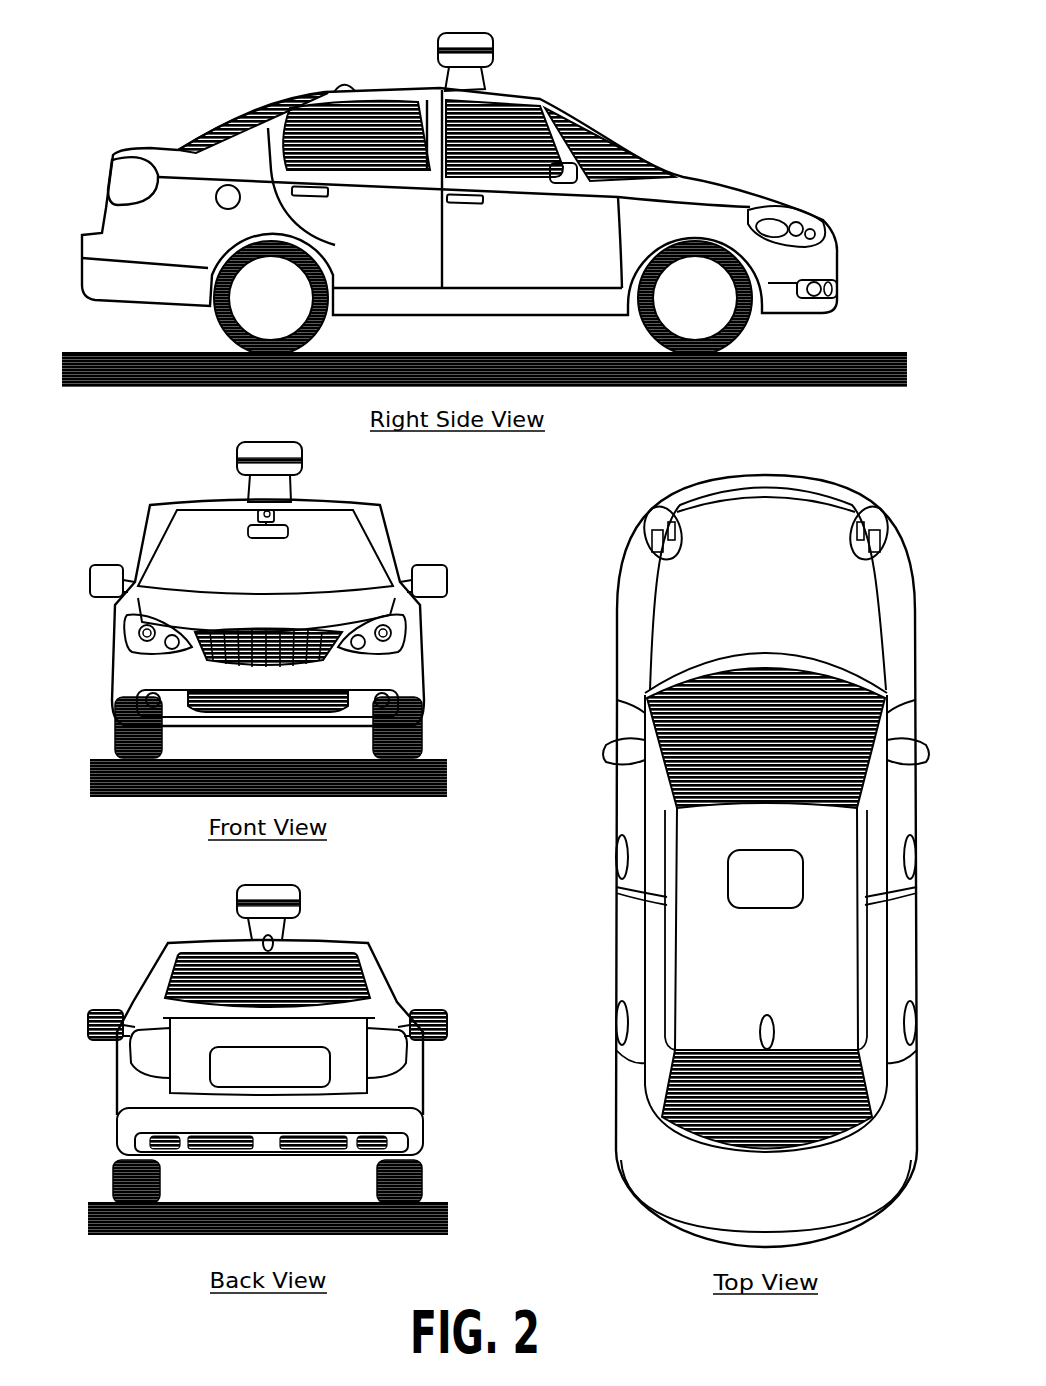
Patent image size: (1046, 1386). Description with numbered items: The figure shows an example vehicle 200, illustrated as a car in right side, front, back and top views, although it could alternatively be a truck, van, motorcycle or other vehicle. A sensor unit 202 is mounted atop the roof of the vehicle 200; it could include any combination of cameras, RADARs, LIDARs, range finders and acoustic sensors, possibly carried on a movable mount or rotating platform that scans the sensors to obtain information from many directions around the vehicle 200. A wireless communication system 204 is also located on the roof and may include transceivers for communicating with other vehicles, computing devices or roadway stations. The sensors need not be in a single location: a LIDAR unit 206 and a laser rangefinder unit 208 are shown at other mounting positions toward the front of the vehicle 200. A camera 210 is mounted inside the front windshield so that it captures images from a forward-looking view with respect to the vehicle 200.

The vehicle 200 is at (73, 138).
The sensor unit 202 is at (493, 62).
The wireless communication system 204 is at (343, 80).
The LIDAR unit 206 is at (837, 288).
The laser rangefinder unit 208 is at (820, 228).
The camera 210 is at (275, 520).